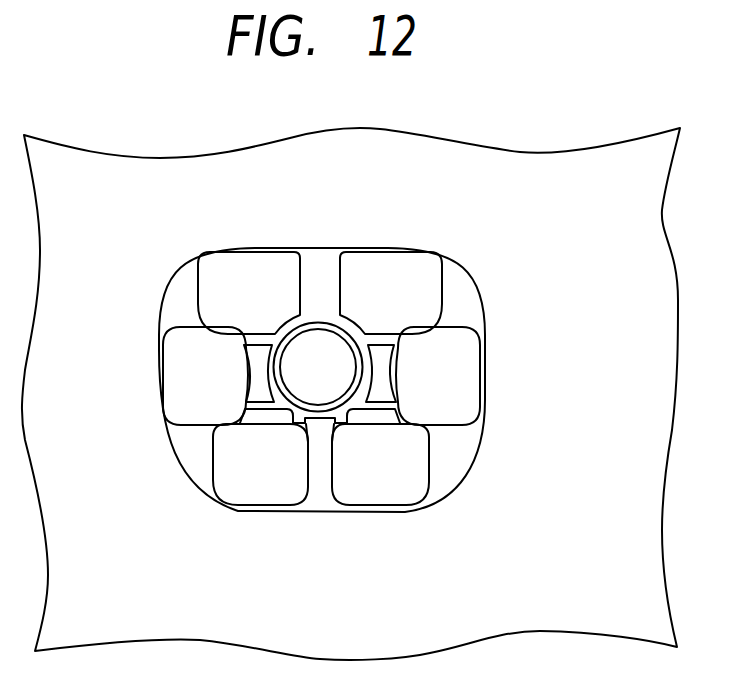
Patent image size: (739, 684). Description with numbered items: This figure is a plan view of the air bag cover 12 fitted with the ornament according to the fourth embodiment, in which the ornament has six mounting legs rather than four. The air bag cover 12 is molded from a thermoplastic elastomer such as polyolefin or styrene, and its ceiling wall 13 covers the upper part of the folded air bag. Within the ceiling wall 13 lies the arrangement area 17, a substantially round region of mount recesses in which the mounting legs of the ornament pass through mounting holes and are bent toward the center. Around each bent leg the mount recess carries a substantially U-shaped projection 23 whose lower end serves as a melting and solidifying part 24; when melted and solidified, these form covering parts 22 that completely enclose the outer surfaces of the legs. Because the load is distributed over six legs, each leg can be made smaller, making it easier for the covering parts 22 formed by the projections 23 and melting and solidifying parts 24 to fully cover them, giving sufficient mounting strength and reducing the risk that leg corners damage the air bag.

The air bag cover 12 is at (351, 364).
The ceiling wall 13 is at (497, 172).
The arrangement area 17 is at (500, 295).
The covering parts 22 is at (370, 290).
The projections 23 is at (273, 377).
The melting and solidifying part 24 is at (390, 337).